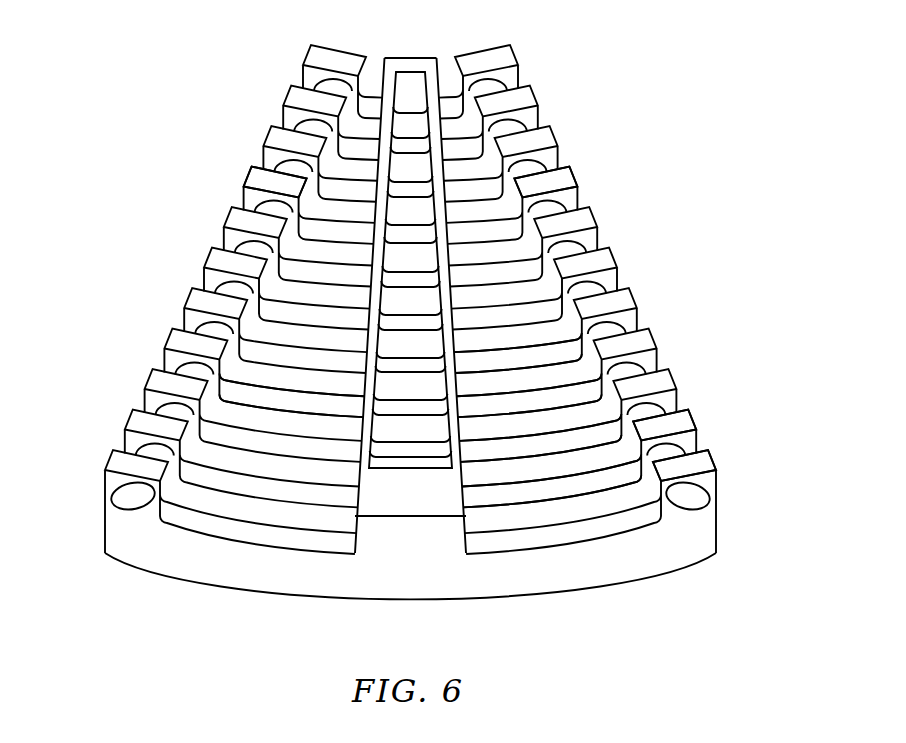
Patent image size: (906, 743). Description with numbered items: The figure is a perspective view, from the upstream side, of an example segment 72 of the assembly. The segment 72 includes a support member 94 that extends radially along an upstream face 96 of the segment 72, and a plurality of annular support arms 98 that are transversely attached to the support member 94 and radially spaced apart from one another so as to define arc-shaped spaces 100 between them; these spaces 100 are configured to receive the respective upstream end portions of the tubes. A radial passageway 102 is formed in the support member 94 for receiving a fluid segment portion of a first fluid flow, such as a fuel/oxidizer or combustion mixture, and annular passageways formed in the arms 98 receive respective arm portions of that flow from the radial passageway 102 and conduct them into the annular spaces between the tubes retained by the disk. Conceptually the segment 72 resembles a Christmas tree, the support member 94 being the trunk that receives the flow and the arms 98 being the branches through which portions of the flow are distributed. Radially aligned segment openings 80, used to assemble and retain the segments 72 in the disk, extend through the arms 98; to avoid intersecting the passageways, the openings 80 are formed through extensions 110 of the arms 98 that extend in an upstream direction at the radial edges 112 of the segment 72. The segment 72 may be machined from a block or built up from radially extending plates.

The segment 72 is at (420, 327).
The segment openings 80 is at (128, 495).
The support member 94 is at (358, 405).
The upstream face 96 is at (307, 402).
The annular support arms 98 is at (555, 487).
The arc-shaped spaces 100 is at (523, 382).
The radial passageway 102 is at (410, 132).
The extensions 110 is at (695, 414).
The radial edges 112 is at (235, 166).